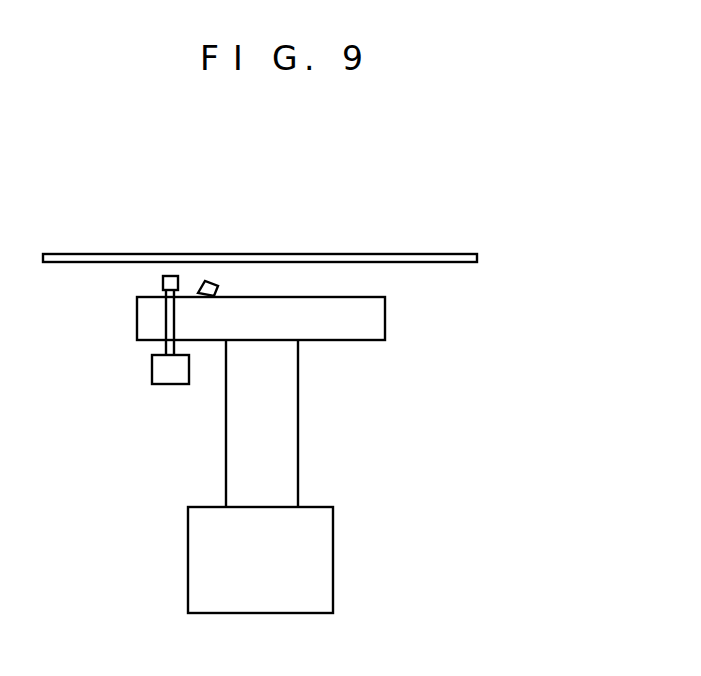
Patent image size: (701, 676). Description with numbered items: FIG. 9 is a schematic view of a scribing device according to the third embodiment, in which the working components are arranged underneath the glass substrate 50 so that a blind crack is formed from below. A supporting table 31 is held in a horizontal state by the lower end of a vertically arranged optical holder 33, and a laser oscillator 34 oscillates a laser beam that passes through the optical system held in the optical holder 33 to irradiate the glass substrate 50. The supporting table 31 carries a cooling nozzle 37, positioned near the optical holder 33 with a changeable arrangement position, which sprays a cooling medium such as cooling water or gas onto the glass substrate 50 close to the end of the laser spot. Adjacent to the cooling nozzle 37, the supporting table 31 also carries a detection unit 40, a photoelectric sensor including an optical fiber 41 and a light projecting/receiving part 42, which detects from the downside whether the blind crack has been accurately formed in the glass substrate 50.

The glass substrate 50 is at (485, 253).
The supporting table 31 is at (385, 318).
The optical holder 33 is at (298, 412).
The laser oscillator 34 is at (333, 557).
The cooling nozzle 37 is at (216, 284).
The detection unit 40 is at (135, 374).
The optical fiber 41 is at (167, 348).
The light projecting/receiving part 42 is at (163, 281).